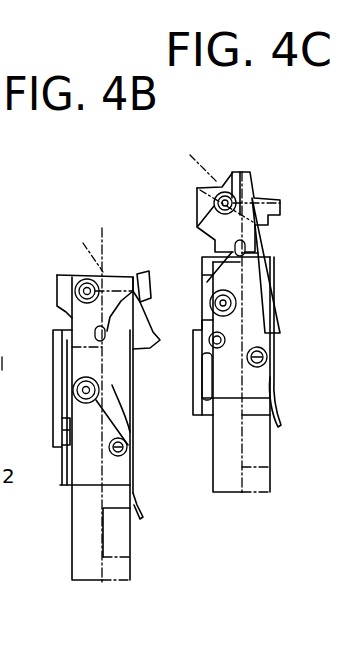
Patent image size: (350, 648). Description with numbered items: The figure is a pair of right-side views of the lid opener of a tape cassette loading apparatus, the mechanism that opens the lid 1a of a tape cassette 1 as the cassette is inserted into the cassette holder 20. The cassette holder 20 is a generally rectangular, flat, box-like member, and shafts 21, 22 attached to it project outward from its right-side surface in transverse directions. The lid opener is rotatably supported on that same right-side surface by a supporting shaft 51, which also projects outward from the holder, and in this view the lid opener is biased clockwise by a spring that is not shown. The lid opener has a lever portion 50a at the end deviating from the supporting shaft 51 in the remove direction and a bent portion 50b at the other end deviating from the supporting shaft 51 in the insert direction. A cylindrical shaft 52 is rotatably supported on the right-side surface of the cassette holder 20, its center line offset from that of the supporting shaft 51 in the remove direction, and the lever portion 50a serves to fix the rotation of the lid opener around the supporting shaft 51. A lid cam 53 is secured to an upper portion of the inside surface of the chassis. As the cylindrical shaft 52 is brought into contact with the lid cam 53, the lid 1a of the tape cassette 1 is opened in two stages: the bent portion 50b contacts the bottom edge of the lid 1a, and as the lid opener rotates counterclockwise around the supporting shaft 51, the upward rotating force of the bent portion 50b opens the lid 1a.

In FIG. 4B, the tape cassette 1 is at (72, 562).
In FIG. 4C, the tape cassette 1 is at (212, 468).
In FIG. 4B, the lid 1a is at (97, 256).
In FIG. 4C, the lid 1a is at (224, 181).
In FIG. 4B, the cassette holder 20 is at (62, 272).
In FIG. 4C, the cassette holder 20 is at (196, 198).
In FIG. 4B, the shaft 21 is at (128, 448).
In FIG. 4C, the shaft 21 is at (266, 360).
In FIG. 4B, the shaft 22 is at (75, 290).
In FIG. 4C, the shaft 22 is at (240, 217).
In FIG. 4B, the lever portion 50a is at (130, 452).
In FIG. 4C, the lever portion 50a is at (253, 298).
In FIG. 4B, the bent portion 50b is at (140, 273).
In FIG. 4C, the bent portion 50b is at (230, 177).
In FIG. 4B, the supporting shaft 51 is at (80, 397).
In FIG. 4C, the supporting shaft 51 is at (214, 302).
In FIG. 4B, the cylindrical shaft 52 is at (62, 420).
In FIG. 4C, the cylindrical shaft 52 is at (205, 342).
In FIG. 4B, the lid cam 53 is at (62, 332).
In FIG. 4C, the lid cam 53 is at (200, 380).